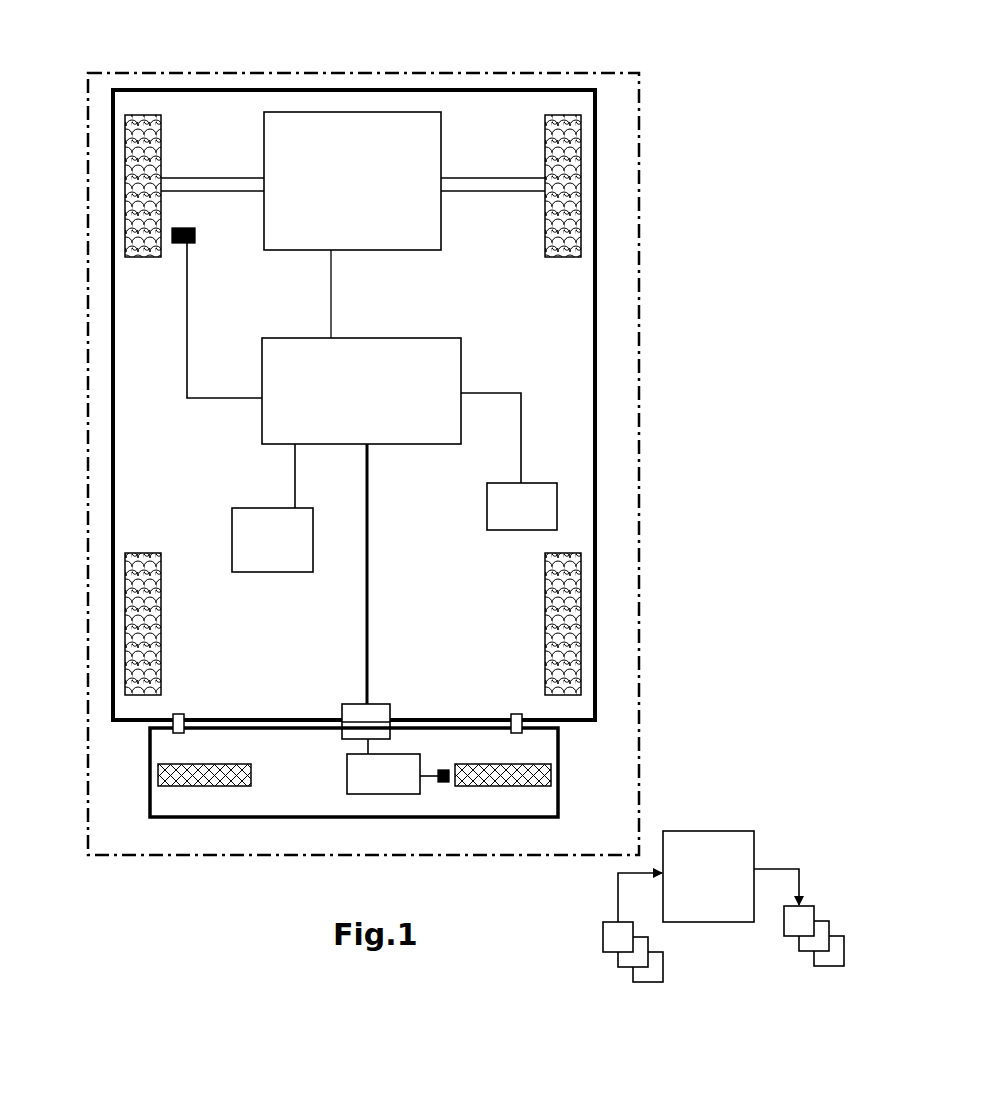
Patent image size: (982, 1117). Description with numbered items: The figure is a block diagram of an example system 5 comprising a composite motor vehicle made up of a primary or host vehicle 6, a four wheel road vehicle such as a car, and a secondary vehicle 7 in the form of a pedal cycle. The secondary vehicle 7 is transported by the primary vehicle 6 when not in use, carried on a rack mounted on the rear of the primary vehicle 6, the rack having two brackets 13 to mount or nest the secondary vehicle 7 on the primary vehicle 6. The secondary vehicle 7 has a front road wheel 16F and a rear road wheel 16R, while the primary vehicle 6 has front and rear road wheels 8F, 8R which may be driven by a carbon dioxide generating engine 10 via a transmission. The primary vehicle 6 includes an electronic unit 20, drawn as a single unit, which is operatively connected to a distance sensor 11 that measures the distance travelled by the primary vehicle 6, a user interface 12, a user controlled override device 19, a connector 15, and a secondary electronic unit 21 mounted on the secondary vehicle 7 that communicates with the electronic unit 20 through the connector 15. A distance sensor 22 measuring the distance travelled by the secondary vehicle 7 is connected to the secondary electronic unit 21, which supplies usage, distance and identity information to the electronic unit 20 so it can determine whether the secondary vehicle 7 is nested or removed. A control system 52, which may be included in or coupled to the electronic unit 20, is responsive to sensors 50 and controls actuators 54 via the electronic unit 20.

The system 5 is at (126, 71).
The primary vehicle 6 is at (111, 347).
The secondary vehicle 7 is at (148, 760).
The front road wheels 8F is at (126, 183).
The rear road wheels 8R is at (127, 588).
The engine 10 is at (352, 225).
The distance sensor 11 is at (195, 240).
The user interface 12 is at (272, 508).
The brackets 13 is at (185, 714).
The connector 15 is at (342, 712).
The front road wheel 16F is at (185, 787).
The rear road wheel 16R is at (508, 787).
The user controlled override device 19 is at (509, 461).
The electronic unit 20 is at (361, 391).
The secondary electronic unit 21 is at (378, 794).
The distance sensor 22 is at (443, 782).
The sensors 50 is at (644, 954).
The control system 52 is at (708, 876).
The actuators 54 is at (815, 943).